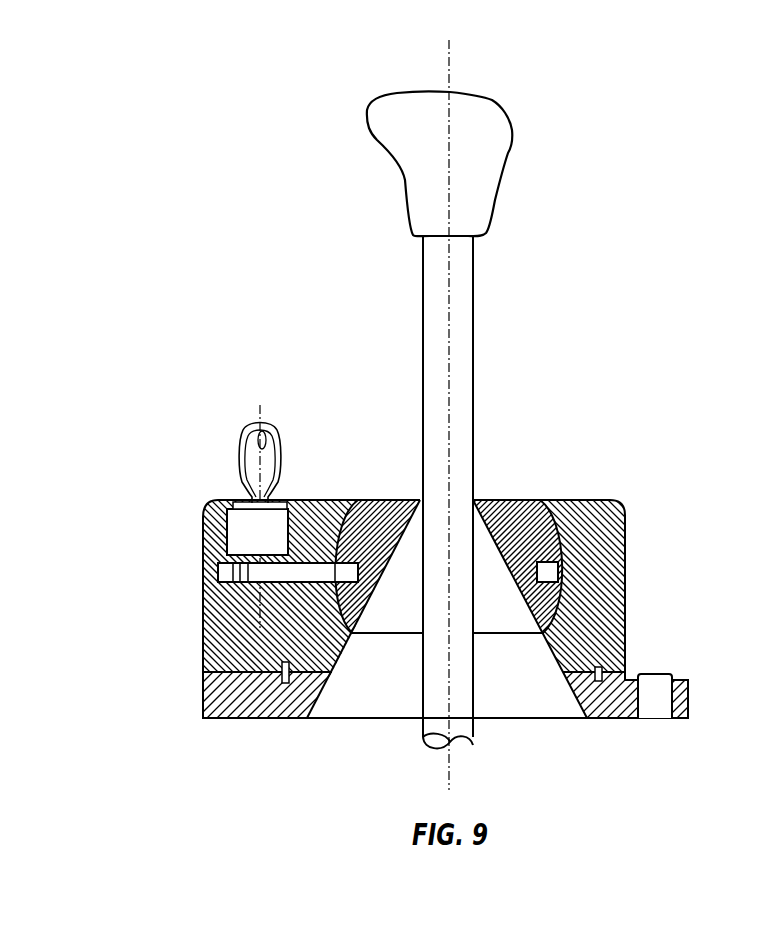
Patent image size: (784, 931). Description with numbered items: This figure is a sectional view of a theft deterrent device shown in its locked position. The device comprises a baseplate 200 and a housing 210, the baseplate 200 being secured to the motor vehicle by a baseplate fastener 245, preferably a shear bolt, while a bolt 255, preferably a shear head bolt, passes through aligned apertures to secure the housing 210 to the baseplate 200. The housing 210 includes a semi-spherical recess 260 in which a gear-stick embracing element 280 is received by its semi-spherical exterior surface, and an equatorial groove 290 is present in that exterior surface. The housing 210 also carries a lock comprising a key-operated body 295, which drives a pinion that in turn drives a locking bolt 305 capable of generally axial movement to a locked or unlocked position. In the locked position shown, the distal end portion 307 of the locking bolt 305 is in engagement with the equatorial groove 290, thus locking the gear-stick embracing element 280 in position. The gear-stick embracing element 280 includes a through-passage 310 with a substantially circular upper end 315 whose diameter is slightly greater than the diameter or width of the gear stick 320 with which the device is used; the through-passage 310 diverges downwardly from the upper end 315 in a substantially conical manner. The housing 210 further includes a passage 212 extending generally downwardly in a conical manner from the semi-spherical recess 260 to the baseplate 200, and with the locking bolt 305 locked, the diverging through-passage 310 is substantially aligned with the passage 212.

The baseplate 200 is at (222, 713).
The housing 210 is at (205, 528).
The passage 212 is at (347, 642).
The baseplate fastener 245 is at (653, 685).
The bolt 255 is at (277, 668).
The semi-spherical recess 260 is at (558, 527).
The gear-stick embracing element 280 is at (400, 498).
The equatorial groove 290 is at (559, 575).
The key-operated body 295 is at (227, 507).
The locking bolt 305 is at (337, 562).
The distal end portion 307 is at (356, 571).
The through-passage 310 is at (492, 634).
The upper end 315 is at (474, 498).
The gear stick 320 is at (407, 115).